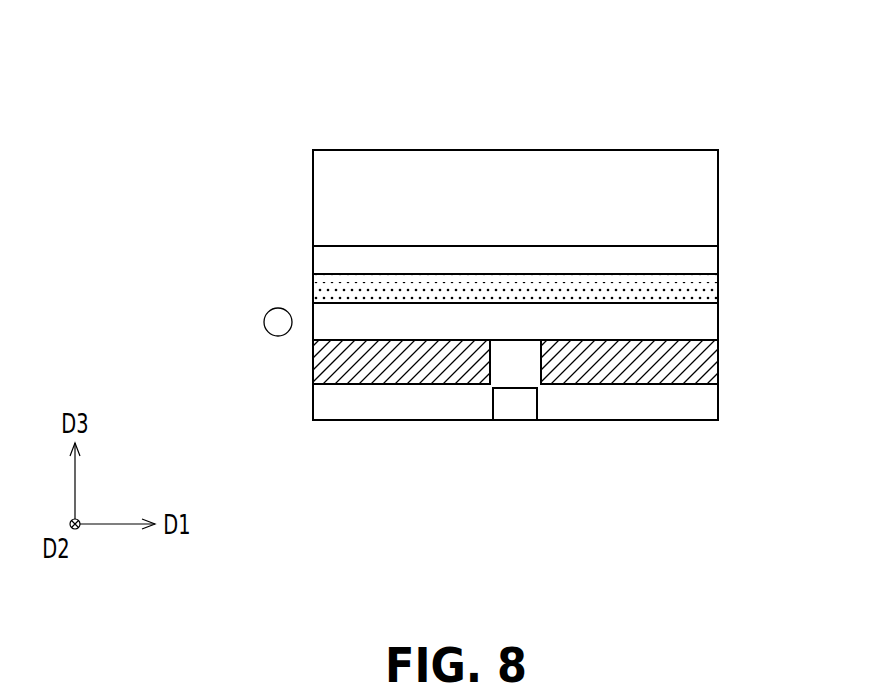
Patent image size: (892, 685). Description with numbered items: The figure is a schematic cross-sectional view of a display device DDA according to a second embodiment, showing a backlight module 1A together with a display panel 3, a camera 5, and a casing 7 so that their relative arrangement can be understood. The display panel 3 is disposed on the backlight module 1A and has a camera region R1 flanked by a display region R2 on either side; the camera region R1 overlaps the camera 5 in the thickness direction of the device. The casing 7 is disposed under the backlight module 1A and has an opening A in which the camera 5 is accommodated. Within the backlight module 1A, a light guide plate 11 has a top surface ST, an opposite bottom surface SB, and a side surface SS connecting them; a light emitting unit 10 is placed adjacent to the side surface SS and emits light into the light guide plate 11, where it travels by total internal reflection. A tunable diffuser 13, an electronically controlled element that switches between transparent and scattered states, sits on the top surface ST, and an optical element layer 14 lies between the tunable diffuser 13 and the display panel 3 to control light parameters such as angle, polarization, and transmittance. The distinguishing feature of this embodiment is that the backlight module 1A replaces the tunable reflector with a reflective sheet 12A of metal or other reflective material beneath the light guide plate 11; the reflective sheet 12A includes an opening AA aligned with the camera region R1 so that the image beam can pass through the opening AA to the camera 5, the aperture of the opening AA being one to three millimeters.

The display device DDA is at (122, 10).
The backlight module 1A is at (122, 130).
The display panel 3 is at (703, 204).
The camera 5 is at (502, 413).
The casing 7 is at (703, 406).
The light emitting unit 10 is at (262, 322).
The light guide plate 11 is at (703, 322).
The reflective sheet 12A is at (703, 363).
The tunable diffuser 13 is at (703, 291).
The optical element layer 14 is at (703, 261).
The top surface ST is at (345, 301).
The side surface SS is at (312, 313).
The bottom surface SB is at (350, 343).
The opening AA is at (539, 371).
The opening A is at (529, 399).
The camera region R1 is at (541, 420).
The display region R2 is at (706, 113).